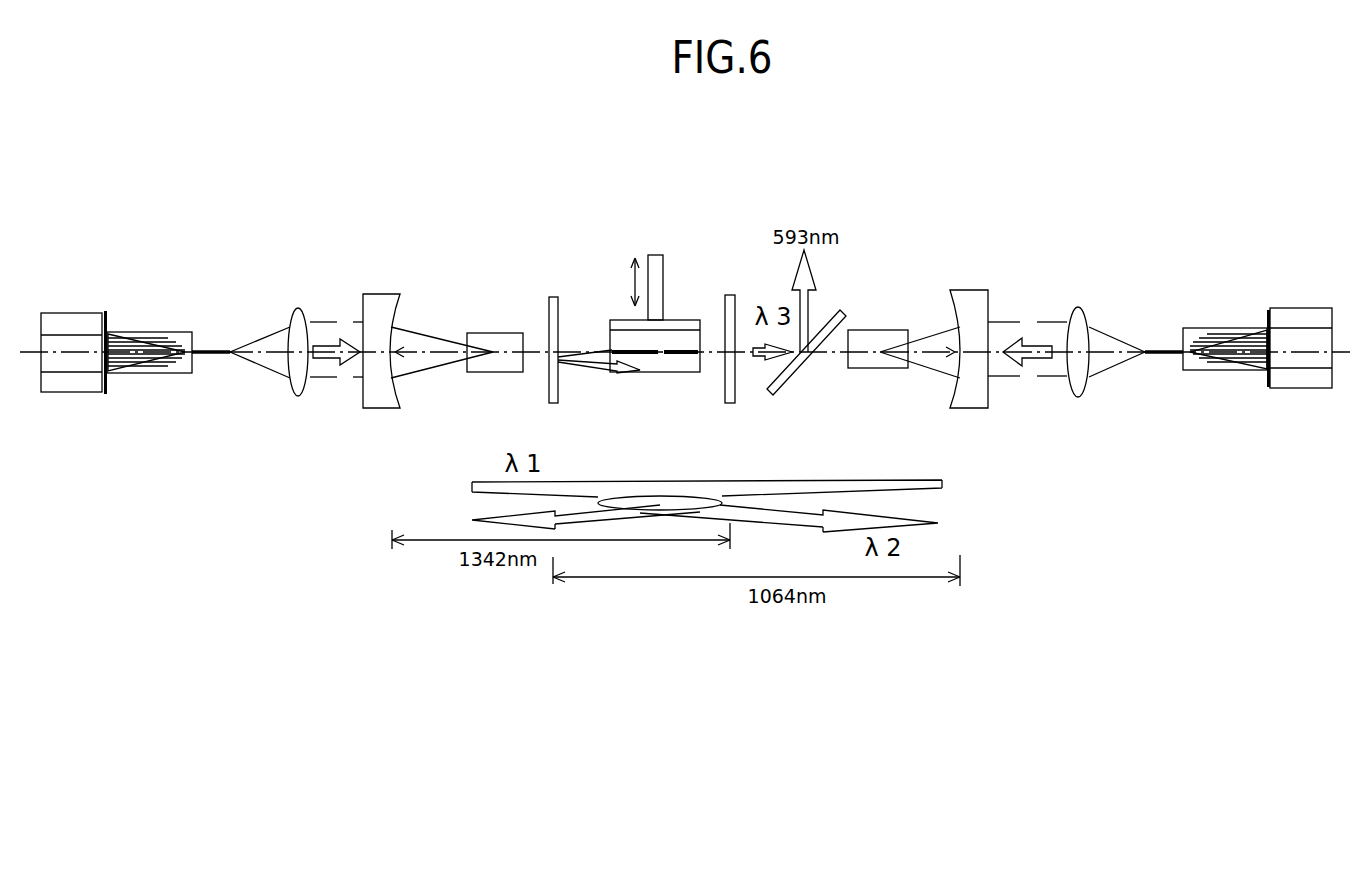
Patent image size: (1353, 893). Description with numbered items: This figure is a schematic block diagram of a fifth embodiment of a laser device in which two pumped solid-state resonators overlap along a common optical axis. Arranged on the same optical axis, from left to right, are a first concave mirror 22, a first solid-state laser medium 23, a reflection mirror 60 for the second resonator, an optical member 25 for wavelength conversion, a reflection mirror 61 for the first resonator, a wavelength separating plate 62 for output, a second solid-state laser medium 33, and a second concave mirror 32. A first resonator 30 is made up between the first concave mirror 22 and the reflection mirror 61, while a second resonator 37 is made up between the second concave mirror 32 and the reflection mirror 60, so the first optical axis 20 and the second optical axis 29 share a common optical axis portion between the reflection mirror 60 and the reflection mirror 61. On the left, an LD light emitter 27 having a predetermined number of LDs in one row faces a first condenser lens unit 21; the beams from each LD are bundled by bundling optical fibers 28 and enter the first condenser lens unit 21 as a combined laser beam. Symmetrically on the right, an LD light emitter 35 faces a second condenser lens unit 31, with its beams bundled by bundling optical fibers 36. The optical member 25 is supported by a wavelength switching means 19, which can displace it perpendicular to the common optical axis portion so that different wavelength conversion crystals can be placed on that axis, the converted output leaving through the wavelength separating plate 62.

The wavelength switching means 19 is at (663, 275).
The first optical axis 20 is at (250, 348).
The first condenser lens unit 21 is at (298, 307).
The first concave mirror 22 is at (390, 294).
The first solid-state laser medium 23 is at (493, 372).
The optical member for wavelength conversion 25 is at (640, 373).
The LD light emitter 27 is at (70, 313).
The bundling optical fibers 28 is at (157, 332).
The second optical axis 29 is at (1132, 346).
The first resonator 30 is at (458, 391).
The second condenser lens unit 31 is at (1078, 303).
The second concave mirror 32 is at (975, 408).
The second solid-state laser medium 33 is at (900, 330).
The LD light emitter 35 is at (1305, 388).
The bundling optical fibers 36 is at (1208, 370).
The second resonator 37 is at (876, 401).
The reflection mirror for the second resonator 60 is at (552, 297).
The reflection mirror for the first resonator 61 is at (728, 295).
The wavelength separating plate for output 62 is at (795, 381).